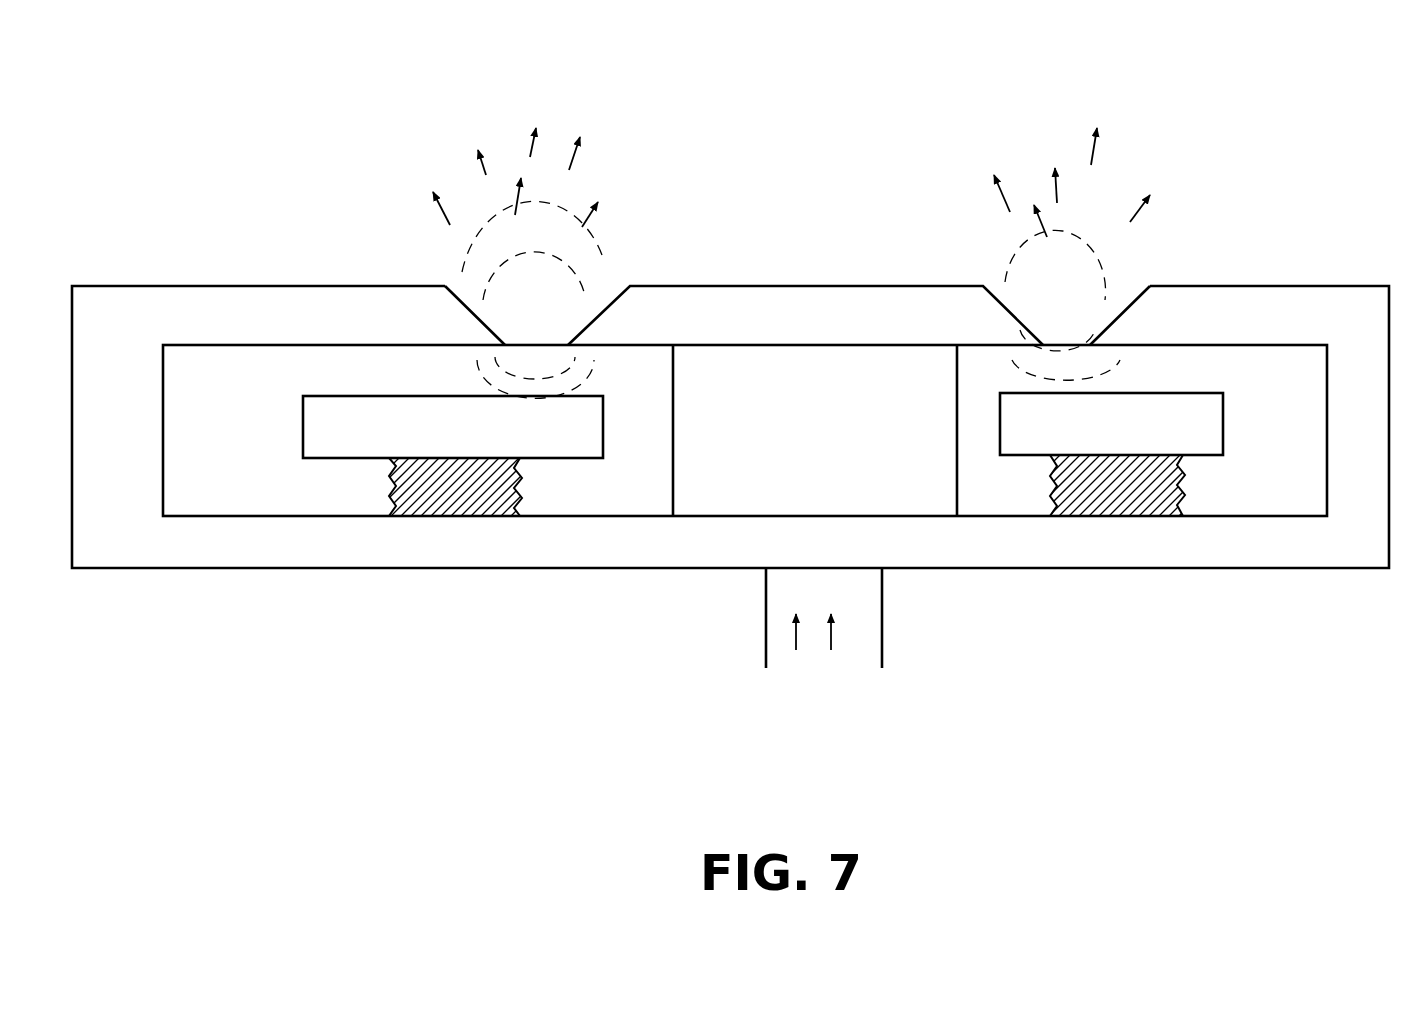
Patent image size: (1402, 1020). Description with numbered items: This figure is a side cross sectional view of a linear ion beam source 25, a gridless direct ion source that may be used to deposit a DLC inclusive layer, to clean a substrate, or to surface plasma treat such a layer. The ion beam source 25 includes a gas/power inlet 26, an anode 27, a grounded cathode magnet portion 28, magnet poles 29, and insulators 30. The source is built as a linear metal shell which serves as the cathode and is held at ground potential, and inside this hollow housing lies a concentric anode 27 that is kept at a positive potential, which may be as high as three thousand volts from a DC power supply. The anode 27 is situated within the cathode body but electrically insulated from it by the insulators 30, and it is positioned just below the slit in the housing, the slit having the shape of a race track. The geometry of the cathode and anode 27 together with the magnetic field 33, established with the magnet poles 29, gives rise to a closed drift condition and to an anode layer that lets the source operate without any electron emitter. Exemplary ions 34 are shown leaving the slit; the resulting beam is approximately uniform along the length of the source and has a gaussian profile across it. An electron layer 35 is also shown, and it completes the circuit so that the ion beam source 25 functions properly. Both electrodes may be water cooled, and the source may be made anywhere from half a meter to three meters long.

The linear ion beam source 25 is at (841, 128).
The gas/power inlet 26 is at (766, 606).
The anode 27 is at (317, 424).
The grounded cathode magnet portion 28 is at (922, 370).
The magnet poles 29 is at (248, 298).
The insulators 30 is at (470, 500).
The magnetic field 33 is at (584, 304).
The ions 34 is at (440, 210).
The electron layer 35 is at (537, 342).